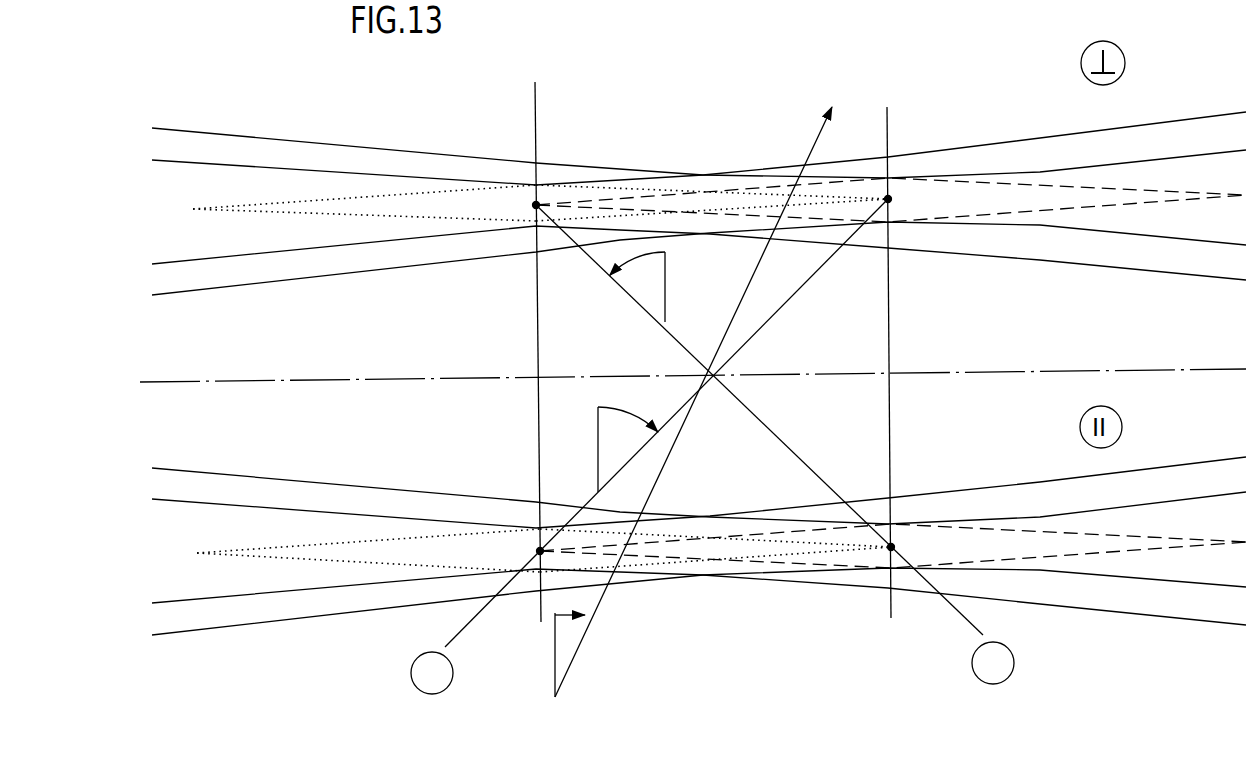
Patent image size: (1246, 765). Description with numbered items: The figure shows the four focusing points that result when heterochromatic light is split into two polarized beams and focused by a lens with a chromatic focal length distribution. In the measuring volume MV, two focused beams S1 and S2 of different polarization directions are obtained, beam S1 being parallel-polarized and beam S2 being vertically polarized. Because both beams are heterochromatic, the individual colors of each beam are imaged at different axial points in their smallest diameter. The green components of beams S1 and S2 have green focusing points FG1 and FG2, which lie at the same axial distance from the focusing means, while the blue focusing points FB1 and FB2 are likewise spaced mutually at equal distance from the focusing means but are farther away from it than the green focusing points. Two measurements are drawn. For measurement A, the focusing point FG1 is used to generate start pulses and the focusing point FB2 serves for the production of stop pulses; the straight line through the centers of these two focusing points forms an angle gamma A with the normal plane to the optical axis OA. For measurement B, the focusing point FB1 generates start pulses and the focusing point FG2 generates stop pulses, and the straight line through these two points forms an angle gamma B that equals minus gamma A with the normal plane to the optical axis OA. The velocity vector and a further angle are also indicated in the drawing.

The focused beam S1 is at (266, 490).
The focused beam S2 is at (265, 148).
The green focusing point FG1 is at (540, 551).
The green focusing point FG2 is at (536, 205).
The blue focusing point FB1 is at (891, 547).
The blue focusing point FB2 is at (888, 198).
The measuring volume MV is at (900, 107).
The optical axis OA is at (1171, 367).
The velocity vector V is at (880, 95).
The measurement A is at (649, 446).
The measurement B is at (775, 444).